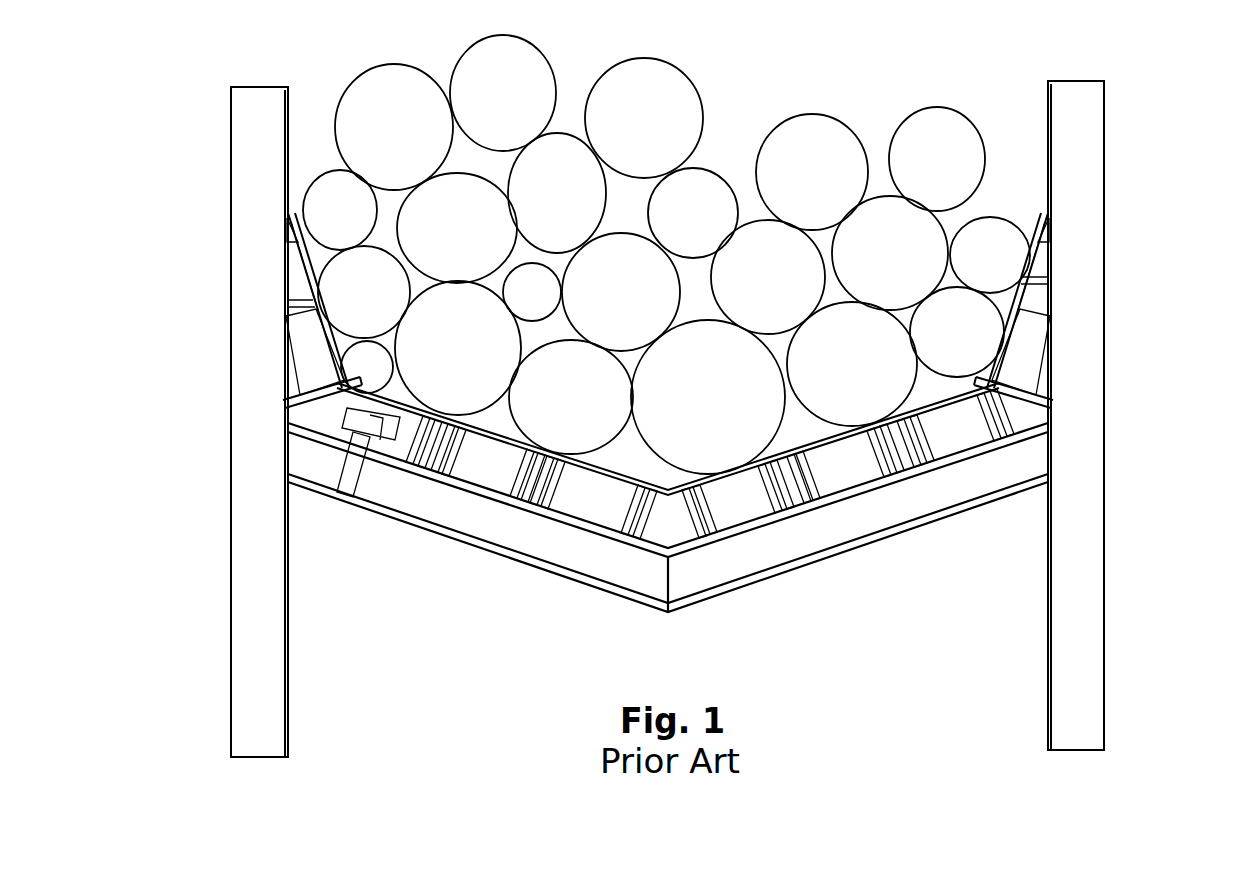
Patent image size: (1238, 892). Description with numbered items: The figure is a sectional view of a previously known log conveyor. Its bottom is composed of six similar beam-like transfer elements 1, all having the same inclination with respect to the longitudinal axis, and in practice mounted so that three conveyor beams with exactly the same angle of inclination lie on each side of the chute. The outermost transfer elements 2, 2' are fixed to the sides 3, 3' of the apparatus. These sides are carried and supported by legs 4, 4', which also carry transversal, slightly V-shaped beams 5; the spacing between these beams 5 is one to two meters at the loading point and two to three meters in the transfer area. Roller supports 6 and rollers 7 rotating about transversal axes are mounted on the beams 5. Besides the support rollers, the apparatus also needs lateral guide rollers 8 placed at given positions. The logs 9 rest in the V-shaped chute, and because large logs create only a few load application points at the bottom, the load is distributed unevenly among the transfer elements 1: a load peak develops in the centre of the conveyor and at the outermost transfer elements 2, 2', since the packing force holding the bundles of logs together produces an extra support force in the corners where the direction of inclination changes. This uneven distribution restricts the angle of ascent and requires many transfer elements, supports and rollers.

The transfer element 1 is at (590, 548).
The transfer element 2 is at (240, 310).
The transfer element 2' is at (1077, 310).
The side 3 is at (199, 253).
The side 3' is at (1119, 250).
The leg 4 is at (208, 588).
The leg 4' is at (1118, 585).
The beam 5 is at (540, 548).
The roller support 6 is at (740, 532).
The roller 7 is at (947, 420).
The lateral guide roller 8 is at (382, 430).
The log 9 is at (787, 140).